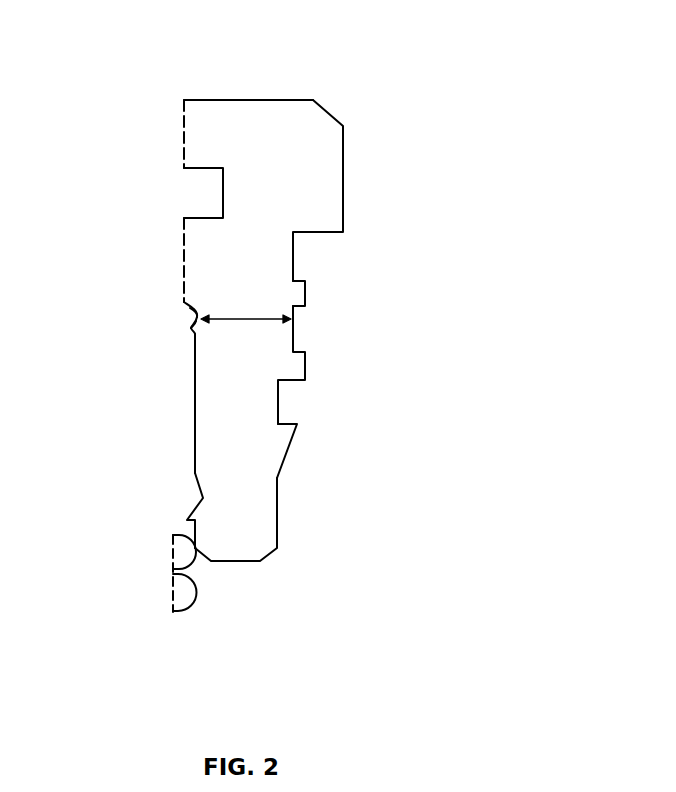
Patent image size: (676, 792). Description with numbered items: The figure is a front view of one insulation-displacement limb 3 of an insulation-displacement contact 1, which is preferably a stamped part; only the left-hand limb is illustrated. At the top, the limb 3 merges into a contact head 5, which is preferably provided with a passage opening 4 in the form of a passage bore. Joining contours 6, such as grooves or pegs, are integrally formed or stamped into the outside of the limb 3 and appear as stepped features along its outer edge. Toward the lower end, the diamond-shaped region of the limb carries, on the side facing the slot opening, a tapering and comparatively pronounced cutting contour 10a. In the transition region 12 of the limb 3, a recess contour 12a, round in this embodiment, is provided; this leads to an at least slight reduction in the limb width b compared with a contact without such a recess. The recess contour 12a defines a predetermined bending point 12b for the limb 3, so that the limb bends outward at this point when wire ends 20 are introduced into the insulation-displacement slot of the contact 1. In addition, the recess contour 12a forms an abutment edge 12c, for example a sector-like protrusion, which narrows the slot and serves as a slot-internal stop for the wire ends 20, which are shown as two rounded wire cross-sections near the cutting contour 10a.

The insulation-displacement contact 1 is at (402, 92).
The insulation-displacement limb 3 is at (277, 345).
The passage opening 4 is at (200, 193).
The contact head 5 is at (323, 193).
The joining contour 6 is at (305, 297).
The transition region 12 is at (177, 303).
The recess contour 12a is at (193, 311).
The predetermined bending point 12b is at (135, 340).
The abutment edge 12c is at (190, 334).
The limb width b is at (253, 318).
The cutting contour 10a is at (185, 520).
The wire end 20 is at (178, 553).